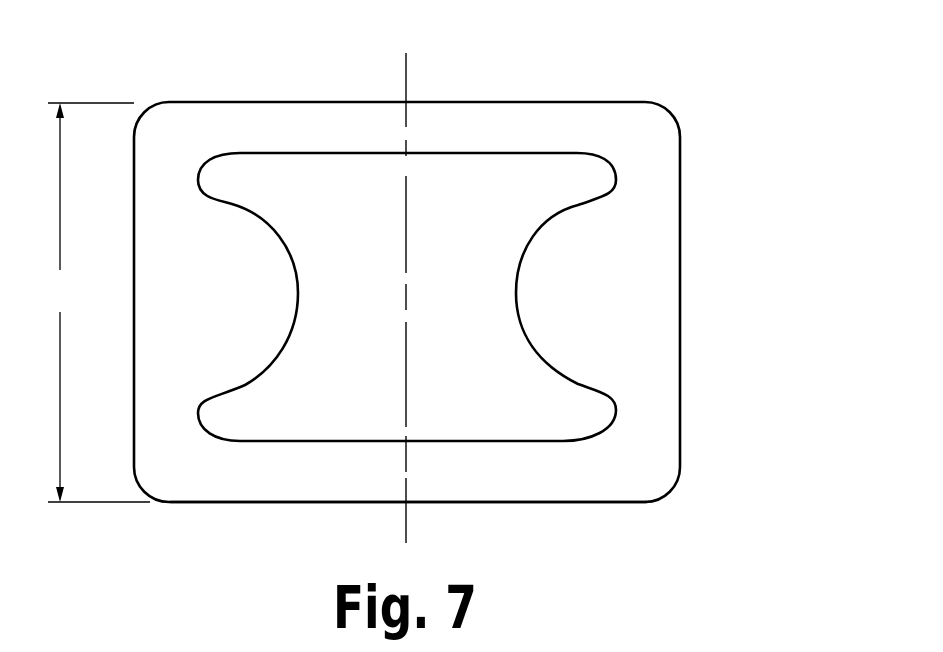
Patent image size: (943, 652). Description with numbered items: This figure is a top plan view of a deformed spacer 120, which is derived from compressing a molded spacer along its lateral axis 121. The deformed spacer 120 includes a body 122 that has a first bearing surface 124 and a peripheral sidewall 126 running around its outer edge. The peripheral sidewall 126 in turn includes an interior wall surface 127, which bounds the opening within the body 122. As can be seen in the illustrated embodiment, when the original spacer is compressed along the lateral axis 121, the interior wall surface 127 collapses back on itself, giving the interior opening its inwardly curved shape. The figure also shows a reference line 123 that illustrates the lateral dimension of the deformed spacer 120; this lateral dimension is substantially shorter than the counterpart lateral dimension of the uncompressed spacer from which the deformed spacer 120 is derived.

The deformed spacer 120 is at (632, 47).
The lateral axis 121 is at (406, 77).
The body 122 is at (655, 372).
The reference line 123 is at (97, 302).
The first bearing surface 124 is at (644, 407).
The peripheral sidewall 126 is at (563, 505).
The interior wall surface 127 is at (259, 380).